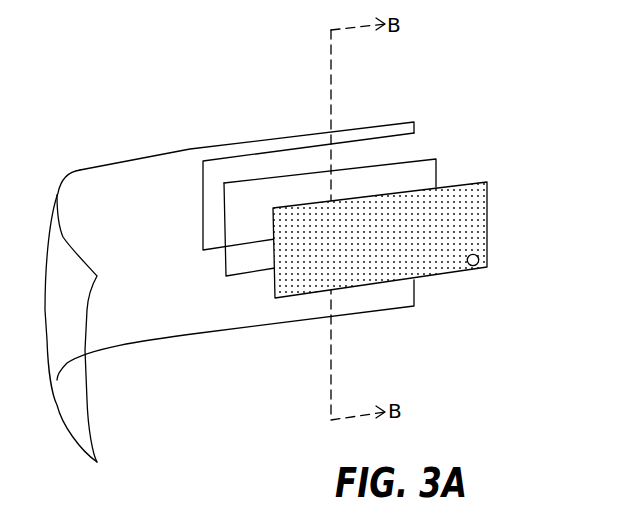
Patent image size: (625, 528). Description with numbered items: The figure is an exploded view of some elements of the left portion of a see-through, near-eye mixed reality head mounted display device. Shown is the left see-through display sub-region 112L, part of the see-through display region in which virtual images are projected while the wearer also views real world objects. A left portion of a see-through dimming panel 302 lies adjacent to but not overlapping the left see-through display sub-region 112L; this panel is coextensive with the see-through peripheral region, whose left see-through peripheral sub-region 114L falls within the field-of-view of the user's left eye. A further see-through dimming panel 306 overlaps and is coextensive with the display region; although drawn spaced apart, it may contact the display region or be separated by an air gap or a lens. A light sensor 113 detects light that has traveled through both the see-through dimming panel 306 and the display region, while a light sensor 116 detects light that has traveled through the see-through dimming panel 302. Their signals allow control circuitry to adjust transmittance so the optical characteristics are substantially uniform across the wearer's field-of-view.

The left see-through peripheral sub-region 114L is at (151, 97).
The see-through dimming panel 302 is at (195, 332).
The see-through dimming panel 306 is at (267, 176).
The left see-through display sub-region 112L is at (473, 223).
The light sensor 116 is at (407, 238).
The light sensor 113 is at (483, 262).